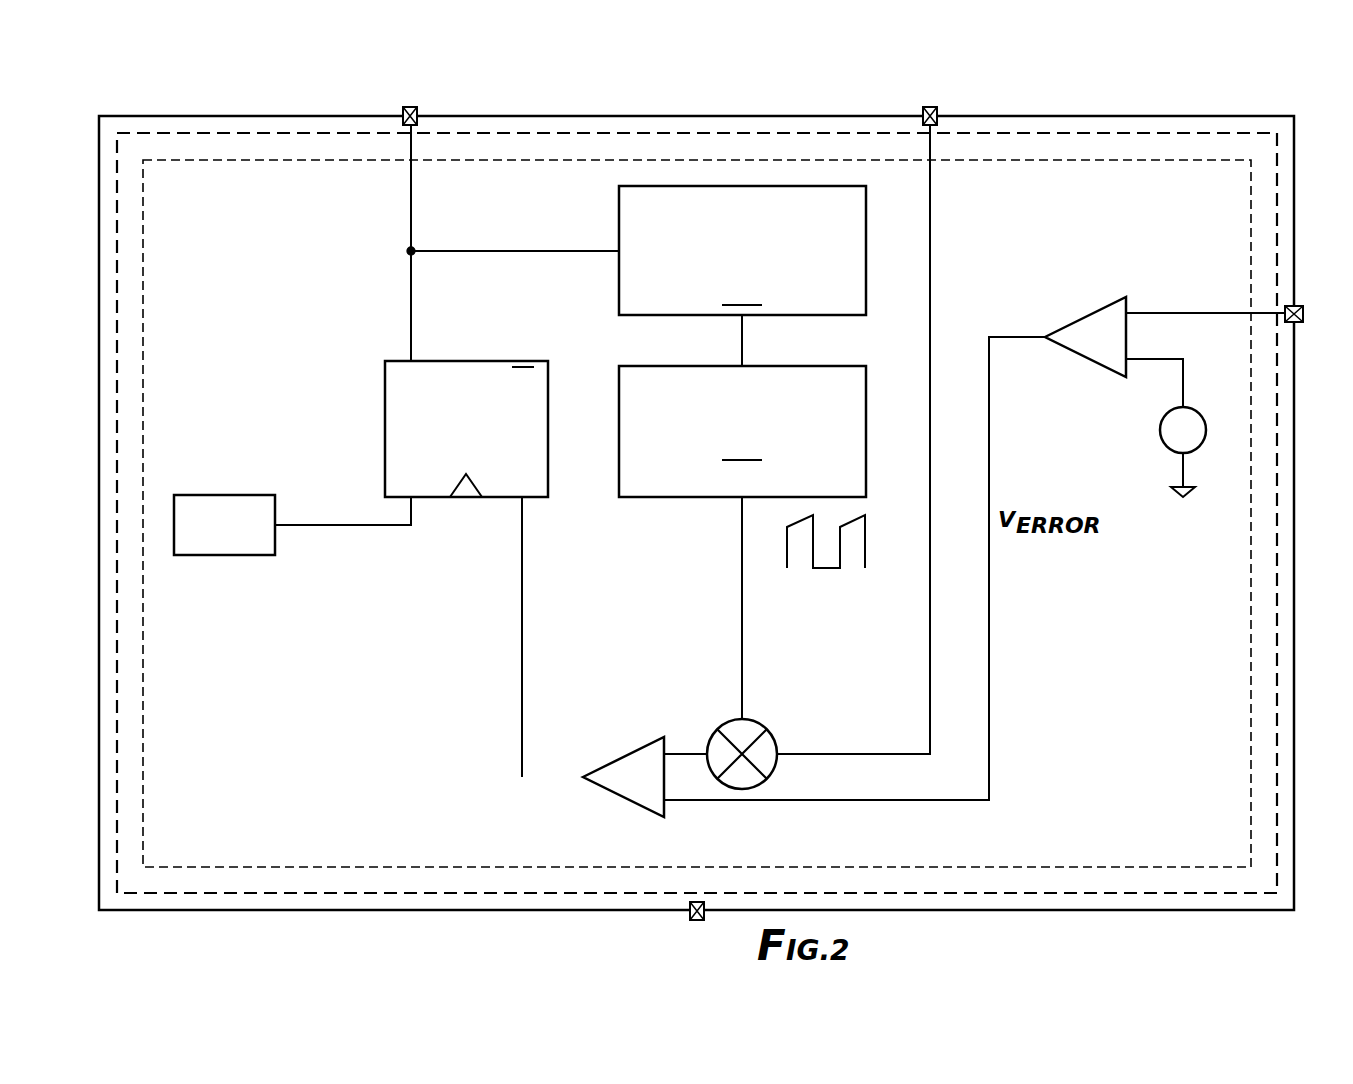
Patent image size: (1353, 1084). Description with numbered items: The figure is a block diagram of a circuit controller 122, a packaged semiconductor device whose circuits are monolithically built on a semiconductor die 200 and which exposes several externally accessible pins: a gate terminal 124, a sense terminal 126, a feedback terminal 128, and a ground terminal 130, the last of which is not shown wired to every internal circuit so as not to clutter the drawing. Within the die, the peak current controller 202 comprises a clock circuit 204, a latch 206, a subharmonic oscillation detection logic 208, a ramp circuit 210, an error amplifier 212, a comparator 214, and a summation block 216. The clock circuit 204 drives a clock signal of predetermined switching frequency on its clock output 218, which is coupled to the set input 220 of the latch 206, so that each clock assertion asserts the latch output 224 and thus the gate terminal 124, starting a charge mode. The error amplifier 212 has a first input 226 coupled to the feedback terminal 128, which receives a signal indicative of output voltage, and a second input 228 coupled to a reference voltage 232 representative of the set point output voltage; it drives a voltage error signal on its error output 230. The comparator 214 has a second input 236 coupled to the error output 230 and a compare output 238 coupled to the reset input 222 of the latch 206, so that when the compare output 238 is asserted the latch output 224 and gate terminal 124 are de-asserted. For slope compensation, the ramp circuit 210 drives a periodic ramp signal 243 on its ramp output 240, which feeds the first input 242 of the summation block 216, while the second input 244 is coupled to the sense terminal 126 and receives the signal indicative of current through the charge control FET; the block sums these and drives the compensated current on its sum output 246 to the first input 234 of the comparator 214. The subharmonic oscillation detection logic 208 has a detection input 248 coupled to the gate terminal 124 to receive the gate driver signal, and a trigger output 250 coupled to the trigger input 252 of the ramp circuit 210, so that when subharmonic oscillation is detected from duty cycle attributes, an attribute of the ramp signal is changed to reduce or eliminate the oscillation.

The circuit controller 122 is at (130, 86).
The semiconductor die 200 is at (270, 133).
The peak current controller 202 is at (250, 257).
The gate terminal 124 is at (413, 107).
The sense terminal 126 is at (935, 107).
The feedback terminal 128 is at (1298, 306).
The ground terminal 130 is at (690, 917).
The clock circuit 204 is at (213, 490).
The latch 206 is at (383, 352).
The subharmonic oscillation detection logic 208 is at (742, 250).
The ramp circuit 210 is at (742, 431).
The error amplifier 212 is at (1097, 300).
The comparator 214 is at (608, 803).
The summation block 216 is at (775, 722).
The clock output 218 is at (280, 526).
The set input 220 is at (412, 498).
The reset input 222 is at (525, 500).
The latch output 224 is at (411, 361).
The first input 226 is at (1128, 310).
The second input 228 is at (1130, 360).
The error output 230 is at (1045, 337).
The reference voltage 232 is at (1170, 450).
The first input 234 is at (672, 753).
The second input 236 is at (666, 801).
The compare output 238 is at (583, 778).
The ramp output 240 is at (740, 500).
The first input 242 is at (745, 720).
The ramp signal 243 is at (798, 572).
The second input 244 is at (781, 756).
The sum output 246 is at (700, 748).
The detection input 248 is at (619, 249).
The trigger output 250 is at (742, 318).
The trigger input 252 is at (742, 364).